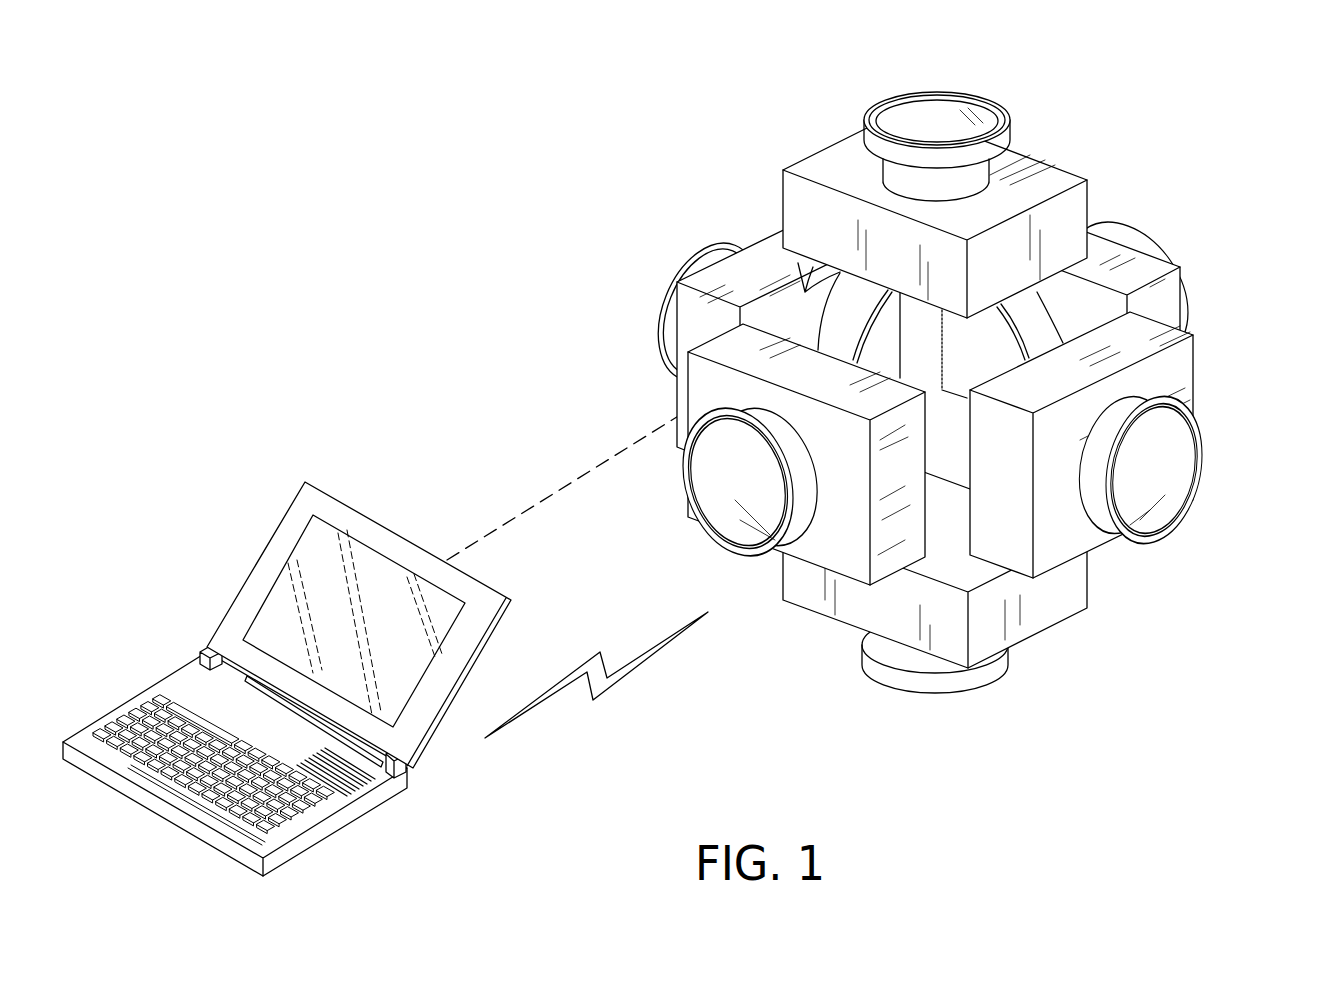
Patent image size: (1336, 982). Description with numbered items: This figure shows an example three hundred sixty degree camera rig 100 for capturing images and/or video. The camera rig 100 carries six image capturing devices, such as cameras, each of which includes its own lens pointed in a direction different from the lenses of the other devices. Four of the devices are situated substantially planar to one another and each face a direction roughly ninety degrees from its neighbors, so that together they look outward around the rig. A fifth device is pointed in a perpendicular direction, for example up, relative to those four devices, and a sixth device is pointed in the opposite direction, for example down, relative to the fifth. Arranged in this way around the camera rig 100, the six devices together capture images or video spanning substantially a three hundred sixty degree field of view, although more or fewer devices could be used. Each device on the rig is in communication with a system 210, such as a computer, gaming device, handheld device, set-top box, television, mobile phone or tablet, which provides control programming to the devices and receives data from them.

The camera rig 100 is at (1266, 104).
The system 210 is at (263, 537).